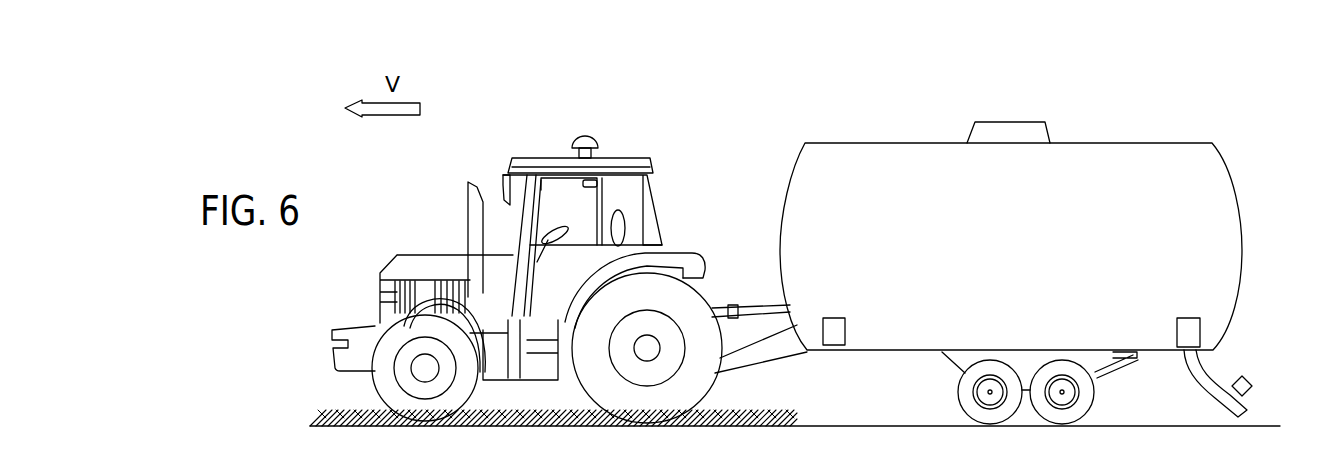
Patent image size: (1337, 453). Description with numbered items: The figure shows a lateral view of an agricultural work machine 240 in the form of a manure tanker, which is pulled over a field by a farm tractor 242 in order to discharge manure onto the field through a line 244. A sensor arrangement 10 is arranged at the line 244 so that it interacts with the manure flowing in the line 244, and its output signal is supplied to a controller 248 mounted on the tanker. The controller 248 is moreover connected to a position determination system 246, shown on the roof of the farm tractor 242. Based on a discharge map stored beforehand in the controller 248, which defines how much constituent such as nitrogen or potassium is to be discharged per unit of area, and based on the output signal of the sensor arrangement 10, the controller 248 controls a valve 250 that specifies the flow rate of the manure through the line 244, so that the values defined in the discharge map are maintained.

The agricultural work machine 240 is at (1209, 78).
The farm tractor 242 is at (669, 69).
The line 244 is at (1213, 370).
The position determination system 246 is at (588, 138).
The controller 248 is at (835, 327).
The valve 250 is at (1181, 328).
The sensor arrangement 10 is at (1252, 384).